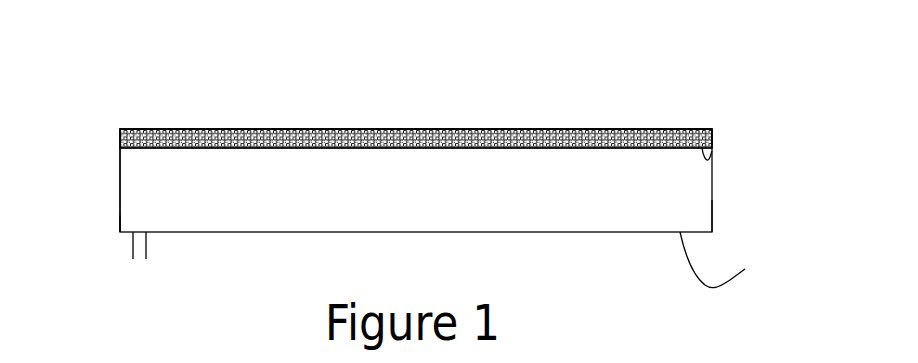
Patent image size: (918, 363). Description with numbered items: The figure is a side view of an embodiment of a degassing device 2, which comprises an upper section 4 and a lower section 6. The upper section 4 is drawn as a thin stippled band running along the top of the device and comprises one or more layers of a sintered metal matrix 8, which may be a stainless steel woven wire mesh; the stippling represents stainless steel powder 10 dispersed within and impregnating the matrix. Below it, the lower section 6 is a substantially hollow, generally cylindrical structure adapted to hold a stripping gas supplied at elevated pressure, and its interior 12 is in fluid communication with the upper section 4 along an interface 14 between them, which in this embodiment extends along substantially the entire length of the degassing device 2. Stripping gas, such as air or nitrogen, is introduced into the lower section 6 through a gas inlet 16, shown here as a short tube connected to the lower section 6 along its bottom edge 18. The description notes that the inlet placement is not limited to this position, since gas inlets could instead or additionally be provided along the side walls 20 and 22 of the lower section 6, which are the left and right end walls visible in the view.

The degassing device 2 is at (545, 86).
The upper section 4 is at (120, 139).
The lower section 6 is at (120, 203).
The sintered metal matrix 8 is at (148, 129).
The stainless steel powder 10 is at (603, 128).
The interior 12 is at (683, 187).
The interface 14 is at (712, 156).
The gas inlet 16 is at (147, 234).
The bottom edge 18 is at (720, 260).
The side wall 20 is at (120, 225).
The side wall 22 is at (712, 215).